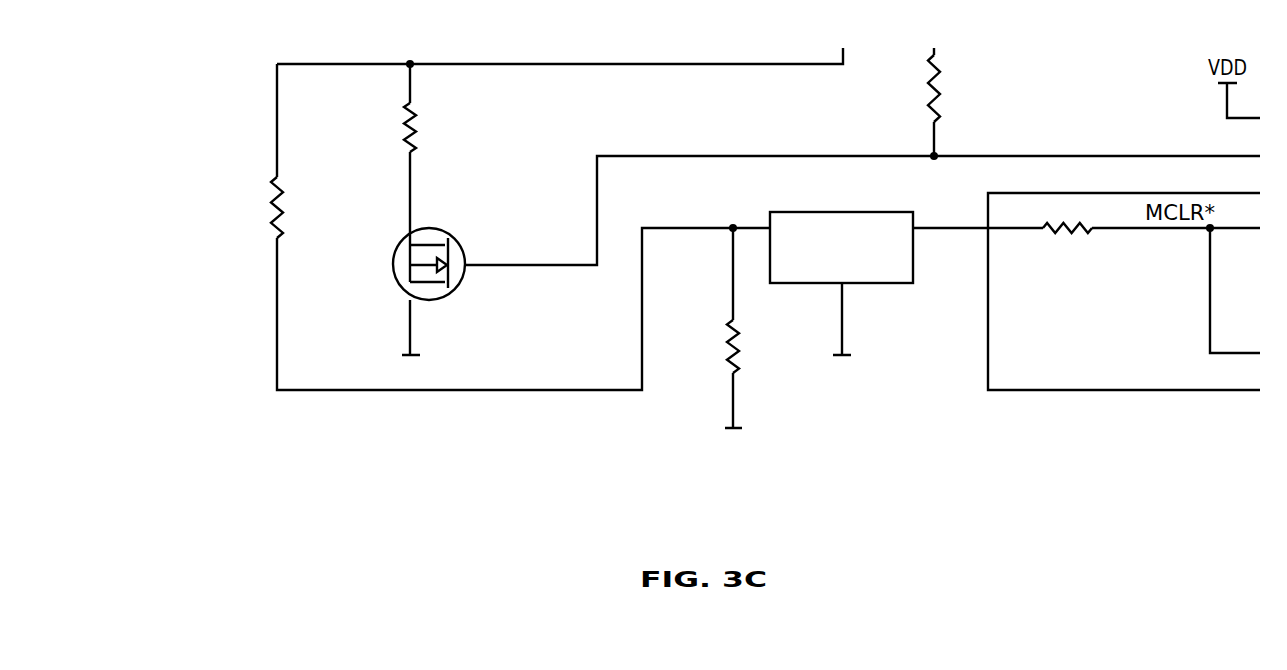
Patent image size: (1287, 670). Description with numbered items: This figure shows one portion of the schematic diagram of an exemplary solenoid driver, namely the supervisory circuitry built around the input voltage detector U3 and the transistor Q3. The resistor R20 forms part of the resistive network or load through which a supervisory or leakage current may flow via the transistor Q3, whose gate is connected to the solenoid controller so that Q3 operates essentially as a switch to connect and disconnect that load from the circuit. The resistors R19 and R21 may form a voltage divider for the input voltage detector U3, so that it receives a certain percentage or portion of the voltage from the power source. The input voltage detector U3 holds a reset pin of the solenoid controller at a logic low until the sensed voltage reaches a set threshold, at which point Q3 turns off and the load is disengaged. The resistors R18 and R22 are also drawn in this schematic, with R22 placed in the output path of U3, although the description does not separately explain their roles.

The resistor R18, 1M 1/10W 1% 0603 (428330-1004) R18 is at (1031, 102).
The resistor R19 is at (161, 206).
The resistor R20 is at (522, 124).
The resistor R21 is at (722, 345).
The resistor R22, 1.0K 1/10W 1% 0603 (428330-1001) R22 is at (1100, 249).
The transistor Q3 is at (509, 290).
The input voltage detector U3 is at (843, 285).